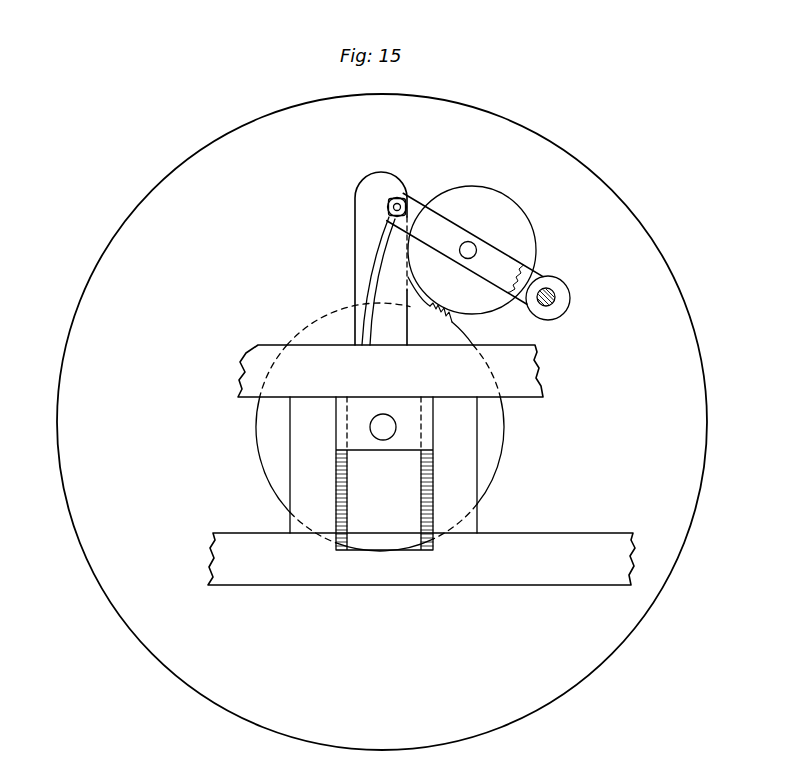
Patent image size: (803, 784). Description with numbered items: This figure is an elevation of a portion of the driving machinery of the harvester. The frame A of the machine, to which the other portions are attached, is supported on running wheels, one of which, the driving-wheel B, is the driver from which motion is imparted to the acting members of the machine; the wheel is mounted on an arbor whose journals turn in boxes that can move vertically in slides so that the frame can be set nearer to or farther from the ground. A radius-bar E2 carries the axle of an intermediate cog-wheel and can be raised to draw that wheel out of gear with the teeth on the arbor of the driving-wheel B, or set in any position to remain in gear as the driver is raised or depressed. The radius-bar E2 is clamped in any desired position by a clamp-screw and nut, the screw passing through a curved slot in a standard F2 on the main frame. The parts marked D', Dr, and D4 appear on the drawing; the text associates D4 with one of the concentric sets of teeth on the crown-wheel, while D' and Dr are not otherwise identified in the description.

The driving wheel B is at (382, 422).
The frame A is at (421, 444).
The standard F2 is at (381, 258).
The radius-bar E2 is at (472, 250).
The rod pin D' is at (478, 256).
The cord Dr is at (449, 311).
The set of teeth of crown-wheel D4 is at (441, 321).